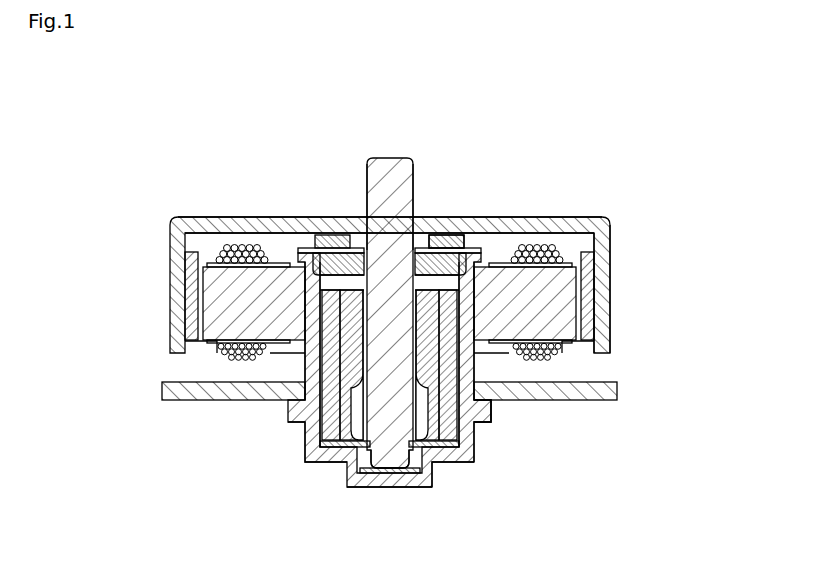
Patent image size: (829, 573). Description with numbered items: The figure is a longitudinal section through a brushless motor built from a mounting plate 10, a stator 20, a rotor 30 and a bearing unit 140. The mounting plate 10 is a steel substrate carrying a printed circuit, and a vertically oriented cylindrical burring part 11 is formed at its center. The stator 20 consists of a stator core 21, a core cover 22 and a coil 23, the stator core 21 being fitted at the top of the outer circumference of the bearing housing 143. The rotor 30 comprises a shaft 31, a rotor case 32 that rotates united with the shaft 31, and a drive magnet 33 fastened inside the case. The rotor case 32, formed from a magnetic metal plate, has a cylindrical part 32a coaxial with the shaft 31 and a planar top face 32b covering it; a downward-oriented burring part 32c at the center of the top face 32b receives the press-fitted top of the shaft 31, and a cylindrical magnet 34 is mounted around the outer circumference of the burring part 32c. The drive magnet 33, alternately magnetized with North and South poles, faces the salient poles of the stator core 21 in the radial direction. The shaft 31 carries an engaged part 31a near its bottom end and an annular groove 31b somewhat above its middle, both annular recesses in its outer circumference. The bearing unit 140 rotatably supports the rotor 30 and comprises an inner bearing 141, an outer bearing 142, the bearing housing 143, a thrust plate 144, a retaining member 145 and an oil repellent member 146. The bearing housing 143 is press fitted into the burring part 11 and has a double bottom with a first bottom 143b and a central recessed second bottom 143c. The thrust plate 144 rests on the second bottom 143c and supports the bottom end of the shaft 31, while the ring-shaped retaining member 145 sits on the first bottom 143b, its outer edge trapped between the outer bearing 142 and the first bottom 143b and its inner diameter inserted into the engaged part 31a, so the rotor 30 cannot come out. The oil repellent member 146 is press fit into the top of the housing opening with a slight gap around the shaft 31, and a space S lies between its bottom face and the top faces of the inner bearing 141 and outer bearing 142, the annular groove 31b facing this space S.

The mounting plate 10 is at (612, 378).
The burring part 11 is at (488, 421).
The stator 20 is at (331, 273).
The stator core 21 is at (210, 300).
The core cover 22 is at (213, 262).
The coil 23 is at (250, 250).
The rotor 30 is at (446, 241).
The shaft 31 is at (344, 308).
The engaged part 31a is at (350, 470).
The annular groove 31b is at (313, 262).
The rotor case 32 is at (446, 241).
The cylindrical part 32a is at (608, 272).
The top face 32b is at (528, 217).
The burring part 32c is at (351, 245).
The drive magnet 33 is at (582, 298).
The cylindrical magnet 34 is at (438, 236).
The bearing unit 140 is at (385, 346).
The inner bearing 141 is at (309, 345).
The outer bearing 142 is at (291, 456).
The bearing housing 143 is at (496, 392).
The first bottom 143b is at (453, 460).
The second bottom 143c is at (415, 486).
The thrust plate 144 is at (382, 473).
The retaining member 145 is at (330, 448).
The oil repellent member 146 is at (462, 252).
The space S is at (447, 277).